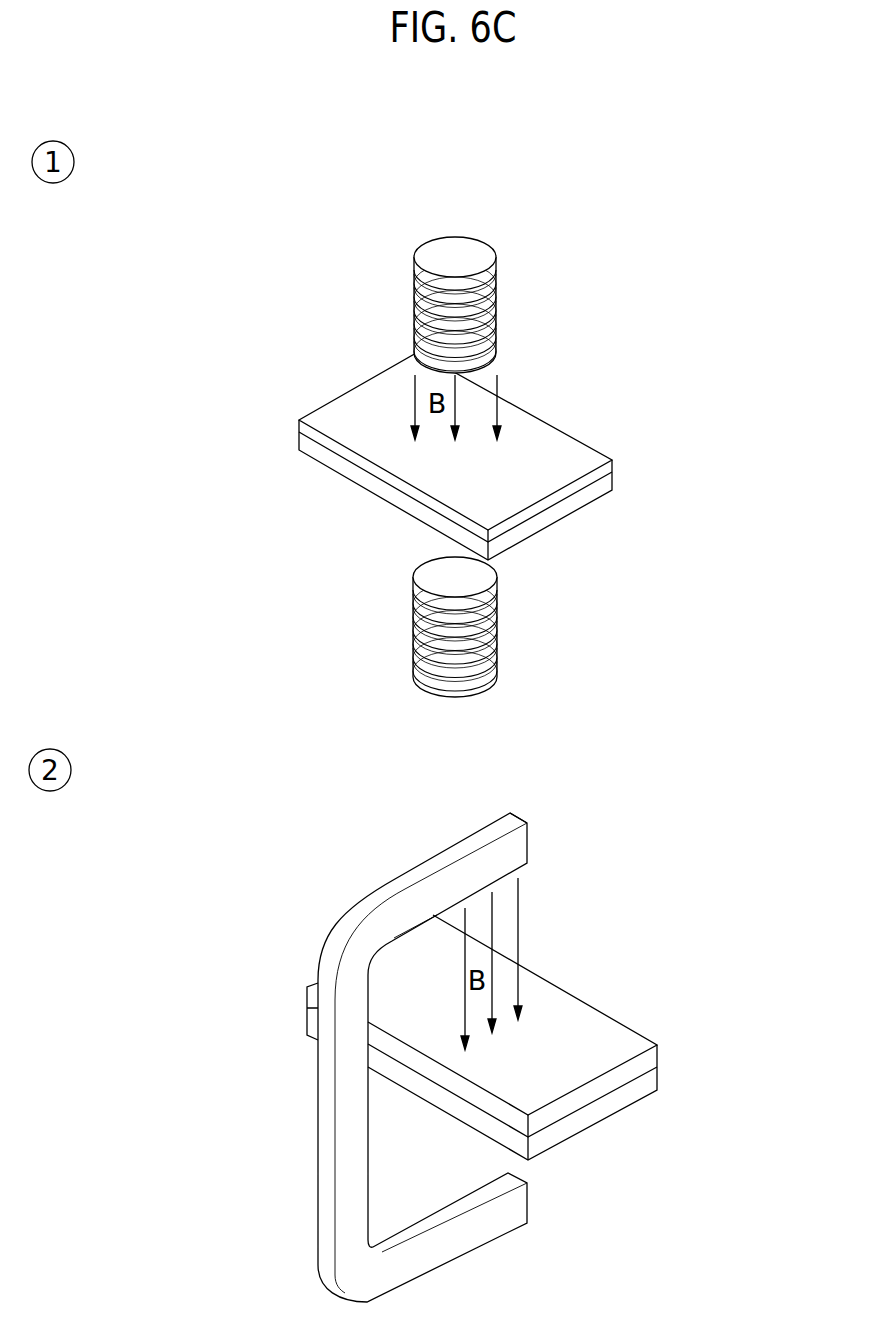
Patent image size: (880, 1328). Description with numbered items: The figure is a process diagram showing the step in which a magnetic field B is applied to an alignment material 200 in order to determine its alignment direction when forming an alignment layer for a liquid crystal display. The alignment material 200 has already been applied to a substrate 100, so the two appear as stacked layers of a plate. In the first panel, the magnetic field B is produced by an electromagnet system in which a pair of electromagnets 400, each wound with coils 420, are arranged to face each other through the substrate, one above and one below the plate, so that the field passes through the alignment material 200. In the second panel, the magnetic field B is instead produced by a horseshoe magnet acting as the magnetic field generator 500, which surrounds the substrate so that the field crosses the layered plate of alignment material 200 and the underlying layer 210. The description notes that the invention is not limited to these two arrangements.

The substrate 100 is at (298, 443).
The alignment material 200 is at (298, 425).
The substrate 210 is at (652, 1083).
The electromagnet 400 is at (483, 248).
The coil 420 is at (495, 318).
The magnetic field generator 500 is at (518, 846).